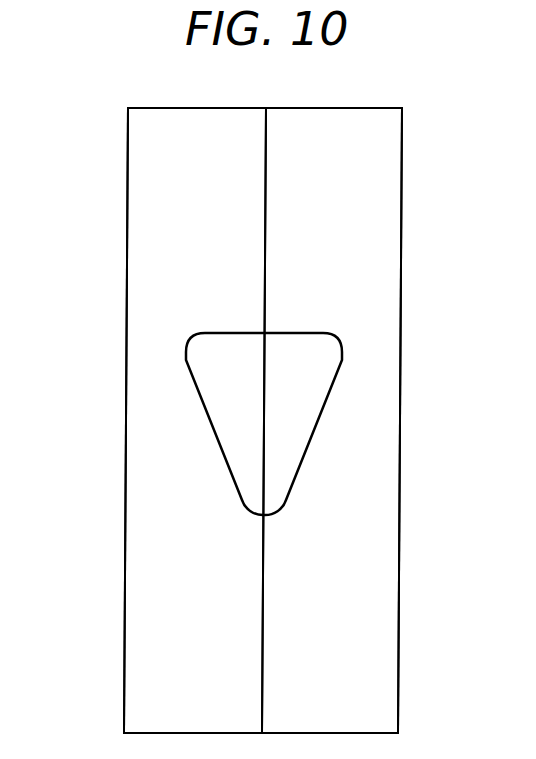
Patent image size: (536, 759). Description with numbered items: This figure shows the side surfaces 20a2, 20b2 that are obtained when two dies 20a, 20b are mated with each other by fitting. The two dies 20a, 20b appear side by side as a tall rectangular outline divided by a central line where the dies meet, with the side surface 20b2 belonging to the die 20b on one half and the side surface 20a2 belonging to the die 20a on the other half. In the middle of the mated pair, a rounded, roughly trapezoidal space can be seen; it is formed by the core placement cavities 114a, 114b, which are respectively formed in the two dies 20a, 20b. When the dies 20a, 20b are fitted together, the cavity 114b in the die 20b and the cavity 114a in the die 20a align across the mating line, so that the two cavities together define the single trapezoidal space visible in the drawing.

The die 20a is at (321, 724).
The die 20b is at (183, 724).
The side surface 20a2 is at (388, 225).
The side surface 20b2 is at (143, 203).
The core placement cavity 114a is at (295, 432).
The core placement cavity 114b is at (230, 447).